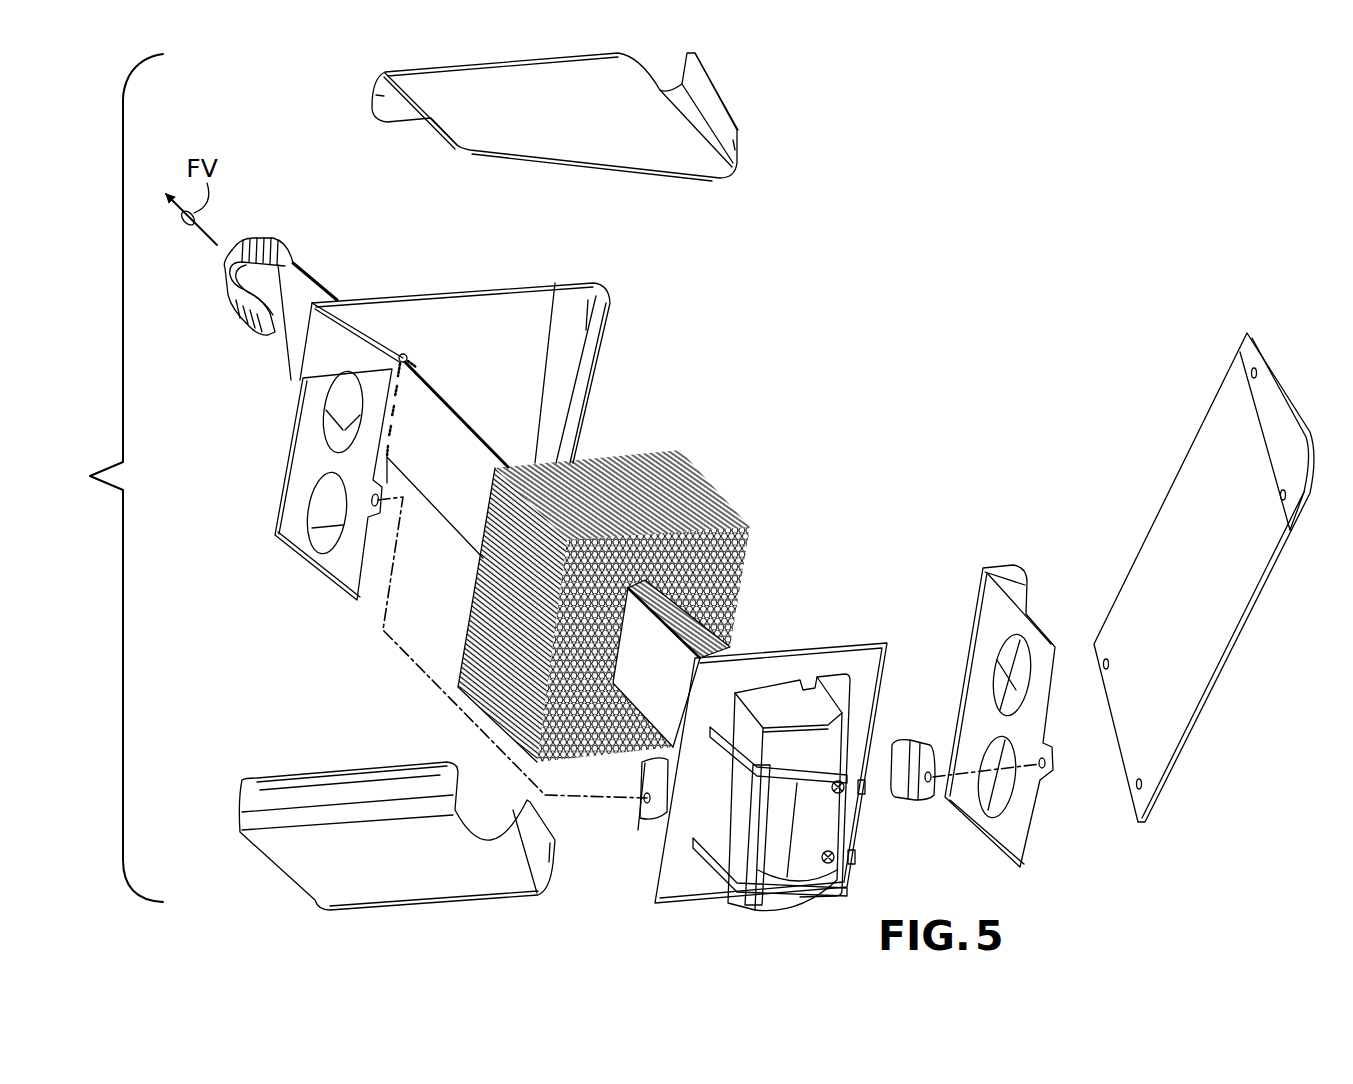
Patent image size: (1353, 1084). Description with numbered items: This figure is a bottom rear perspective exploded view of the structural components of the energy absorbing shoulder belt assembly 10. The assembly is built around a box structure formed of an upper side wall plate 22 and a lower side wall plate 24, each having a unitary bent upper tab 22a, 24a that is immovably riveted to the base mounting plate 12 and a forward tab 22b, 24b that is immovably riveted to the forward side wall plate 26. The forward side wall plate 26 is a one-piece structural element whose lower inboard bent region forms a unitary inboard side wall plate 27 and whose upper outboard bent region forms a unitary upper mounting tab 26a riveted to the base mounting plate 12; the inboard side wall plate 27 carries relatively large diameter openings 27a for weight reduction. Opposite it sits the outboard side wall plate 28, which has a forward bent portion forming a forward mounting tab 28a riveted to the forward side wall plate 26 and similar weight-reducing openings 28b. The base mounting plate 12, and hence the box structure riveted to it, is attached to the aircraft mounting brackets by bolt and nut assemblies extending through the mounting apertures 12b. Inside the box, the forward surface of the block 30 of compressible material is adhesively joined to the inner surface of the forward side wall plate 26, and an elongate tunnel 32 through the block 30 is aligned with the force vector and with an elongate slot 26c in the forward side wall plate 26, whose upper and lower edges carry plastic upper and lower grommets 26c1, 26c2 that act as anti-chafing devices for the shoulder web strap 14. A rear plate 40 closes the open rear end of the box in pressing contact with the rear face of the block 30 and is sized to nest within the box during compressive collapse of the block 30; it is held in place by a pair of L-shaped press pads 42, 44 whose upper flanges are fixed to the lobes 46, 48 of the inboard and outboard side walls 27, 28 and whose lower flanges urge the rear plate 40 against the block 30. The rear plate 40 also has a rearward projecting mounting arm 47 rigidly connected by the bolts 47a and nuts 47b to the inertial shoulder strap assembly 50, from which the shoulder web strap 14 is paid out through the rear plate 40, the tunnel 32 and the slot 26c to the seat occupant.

The shoulder belt assembly 10 is at (905, 312).
The base mounting plate 12 is at (1174, 586).
The mounting apertures 12b is at (1251, 373).
The shoulder web strap 14 is at (426, 473).
The upper side wall plate 22 is at (524, 129).
The upper tab 22a is at (728, 112).
The forward tab 22b is at (385, 97).
The lower side wall plate 24 is at (364, 868).
The upper tab 24a is at (553, 870).
The forward tab 24b is at (340, 788).
The forward side wall plate 26 is at (496, 353).
The upper mounting tab 26a is at (595, 328).
The elongate slot 26c is at (406, 356).
The upper grommet 26c1 is at (414, 363).
The lower grommet 26c2 is at (396, 368).
The inboard side wall plate 27 is at (292, 484).
The openings 27a is at (333, 410).
The outboard side wall plate 28 is at (994, 687).
The forward mounting tab 28a is at (1007, 573).
The openings 28b is at (1002, 662).
The block of compressible material 30 is at (634, 606).
The elongate tunnel 32 is at (667, 595).
The rear plate 40 is at (691, 788).
The press pad 42 is at (645, 815).
The press pad 44 is at (920, 800).
The lobe 46 is at (385, 523).
The mounting arm 47 is at (813, 806).
The bolts 47a is at (830, 798).
The nuts 47b is at (863, 788).
The lobe 48 is at (1053, 770).
The inertial shoulder strap assembly 50 is at (776, 838).